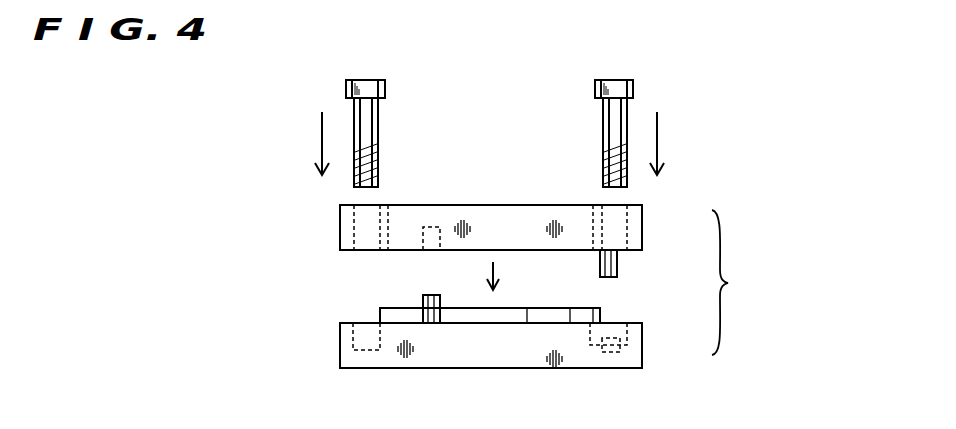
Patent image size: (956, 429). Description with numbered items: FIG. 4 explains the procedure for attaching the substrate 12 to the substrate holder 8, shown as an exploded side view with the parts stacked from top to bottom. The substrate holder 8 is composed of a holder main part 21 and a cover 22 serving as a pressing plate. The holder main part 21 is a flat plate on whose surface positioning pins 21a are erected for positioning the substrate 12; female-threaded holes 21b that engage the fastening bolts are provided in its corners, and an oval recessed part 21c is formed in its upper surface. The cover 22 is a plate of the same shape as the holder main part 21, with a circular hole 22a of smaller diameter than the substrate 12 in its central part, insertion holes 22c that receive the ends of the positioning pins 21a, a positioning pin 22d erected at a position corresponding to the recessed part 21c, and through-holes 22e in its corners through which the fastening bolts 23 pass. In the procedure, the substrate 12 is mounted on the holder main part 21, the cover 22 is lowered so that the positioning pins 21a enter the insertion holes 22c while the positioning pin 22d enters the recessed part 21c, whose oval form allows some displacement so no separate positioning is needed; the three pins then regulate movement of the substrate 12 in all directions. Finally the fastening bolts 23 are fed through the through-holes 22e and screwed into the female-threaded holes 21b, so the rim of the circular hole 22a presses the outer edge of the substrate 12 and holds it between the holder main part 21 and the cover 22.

The substrate holder 8 is at (730, 282).
The substrate 12 is at (535, 308).
The holder main part 21 is at (645, 348).
The positioning pin 21a is at (457, 285).
The female-threaded hole 21b is at (367, 334).
The recessed part 21c is at (613, 336).
The cover 22 is at (645, 232).
The circular hole 22a is at (505, 210).
The insertion hole 22c is at (430, 245).
The positioning pin 22d is at (618, 271).
The through-hole 22e is at (376, 210).
The fastening bolt 23 is at (595, 87).